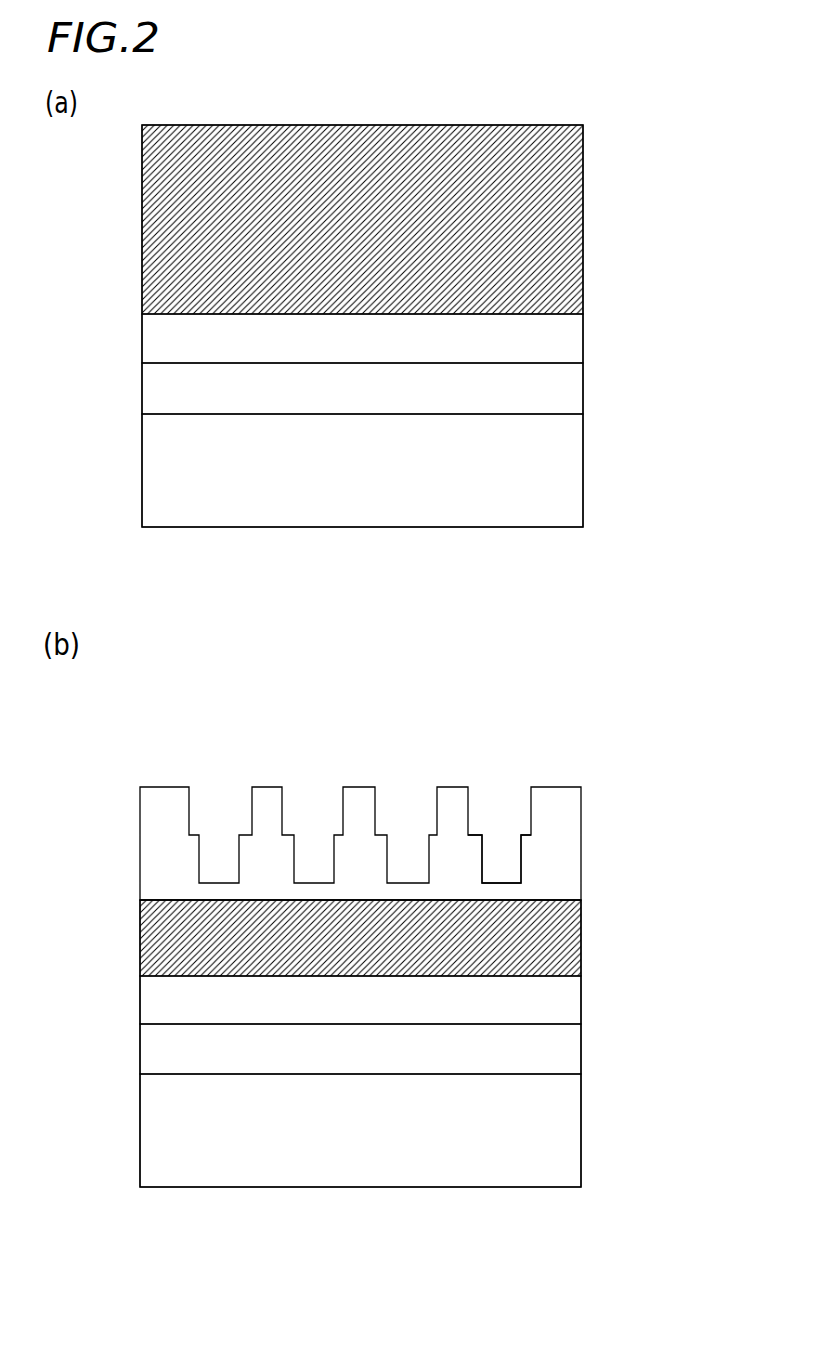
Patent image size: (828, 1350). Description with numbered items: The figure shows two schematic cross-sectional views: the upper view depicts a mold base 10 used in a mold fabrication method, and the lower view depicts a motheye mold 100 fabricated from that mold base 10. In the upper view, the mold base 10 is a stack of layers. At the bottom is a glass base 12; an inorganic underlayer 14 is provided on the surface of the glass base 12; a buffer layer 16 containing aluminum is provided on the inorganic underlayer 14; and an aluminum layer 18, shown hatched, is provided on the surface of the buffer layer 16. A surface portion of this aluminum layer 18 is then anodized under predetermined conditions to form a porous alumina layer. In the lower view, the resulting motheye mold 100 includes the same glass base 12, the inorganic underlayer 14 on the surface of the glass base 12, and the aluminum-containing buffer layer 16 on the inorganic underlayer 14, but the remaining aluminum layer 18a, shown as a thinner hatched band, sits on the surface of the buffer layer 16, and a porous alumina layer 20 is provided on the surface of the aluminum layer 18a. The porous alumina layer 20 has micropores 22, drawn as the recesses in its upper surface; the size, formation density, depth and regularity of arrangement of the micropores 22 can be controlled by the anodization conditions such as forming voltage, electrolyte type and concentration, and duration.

The mold base 10 is at (650, 185).
The glass base 12 is at (569, 465).
The inorganic underlayer 14 is at (569, 390).
The buffer layer 16 is at (569, 340).
The aluminum layer 18 is at (573, 263).
The aluminum layer 18a is at (573, 933).
The porous alumina layer 20 is at (568, 862).
The micropores 22 is at (505, 806).
The motheye mold 100 is at (650, 747).